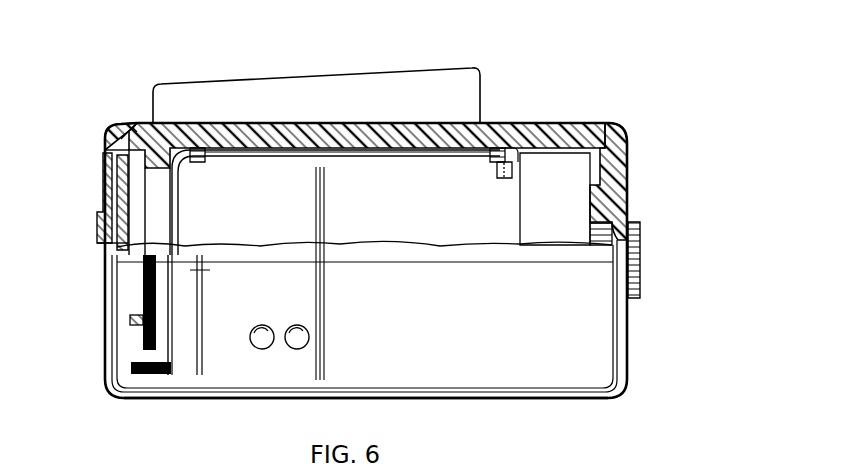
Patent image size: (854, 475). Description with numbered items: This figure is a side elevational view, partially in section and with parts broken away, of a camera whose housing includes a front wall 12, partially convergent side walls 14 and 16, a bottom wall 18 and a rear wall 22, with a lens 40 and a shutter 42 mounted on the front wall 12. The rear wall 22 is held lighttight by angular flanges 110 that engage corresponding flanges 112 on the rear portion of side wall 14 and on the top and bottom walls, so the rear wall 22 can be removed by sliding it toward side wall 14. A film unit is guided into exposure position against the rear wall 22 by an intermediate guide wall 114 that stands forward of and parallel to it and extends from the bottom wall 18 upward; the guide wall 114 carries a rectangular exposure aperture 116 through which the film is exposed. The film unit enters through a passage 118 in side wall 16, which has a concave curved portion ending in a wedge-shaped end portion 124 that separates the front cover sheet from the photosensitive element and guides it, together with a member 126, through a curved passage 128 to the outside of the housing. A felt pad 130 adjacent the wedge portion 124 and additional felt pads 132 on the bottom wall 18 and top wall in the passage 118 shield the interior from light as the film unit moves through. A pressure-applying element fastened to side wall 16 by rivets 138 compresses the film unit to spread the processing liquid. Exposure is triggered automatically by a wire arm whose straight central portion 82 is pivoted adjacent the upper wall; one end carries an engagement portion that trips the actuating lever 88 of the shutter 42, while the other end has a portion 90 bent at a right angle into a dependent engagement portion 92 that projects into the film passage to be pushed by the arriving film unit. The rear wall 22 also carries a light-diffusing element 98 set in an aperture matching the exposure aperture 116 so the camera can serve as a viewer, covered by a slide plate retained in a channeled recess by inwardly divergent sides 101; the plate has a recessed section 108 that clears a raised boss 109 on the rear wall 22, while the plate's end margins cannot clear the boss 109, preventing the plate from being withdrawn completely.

The front wall 12 is at (625, 176).
The side wall 14 is at (418, 210).
The side wall 16 is at (472, 336).
The bottom wall 18 is at (305, 399).
The rear wall 22 is at (112, 147).
The lens 40 is at (641, 250).
The shutter 42 is at (564, 203).
The central portion 82 is at (345, 156).
The actuating lever 88 is at (503, 180).
The portion 90 is at (186, 200).
The dependent engagement portion 92 is at (143, 345).
The light-diffusing element 98 is at (124, 192).
The inwardly divergent sides 101 is at (112, 162).
The recessed section 108 is at (103, 232).
The raised boss 109 is at (110, 245).
The angular flanges 110 is at (137, 126).
The flanges 112 is at (122, 133).
The intermediate guide wall 114 is at (177, 180).
The exposure aperture 116 is at (171, 222).
The passage 118 is at (137, 318).
The wedge-shaped end portion 124 is at (163, 345).
The member 126 is at (190, 279).
The curved passage 128 is at (204, 305).
The felt pad 130 is at (143, 283).
The felt pads 132 is at (135, 370).
The rivets 138 is at (264, 349).